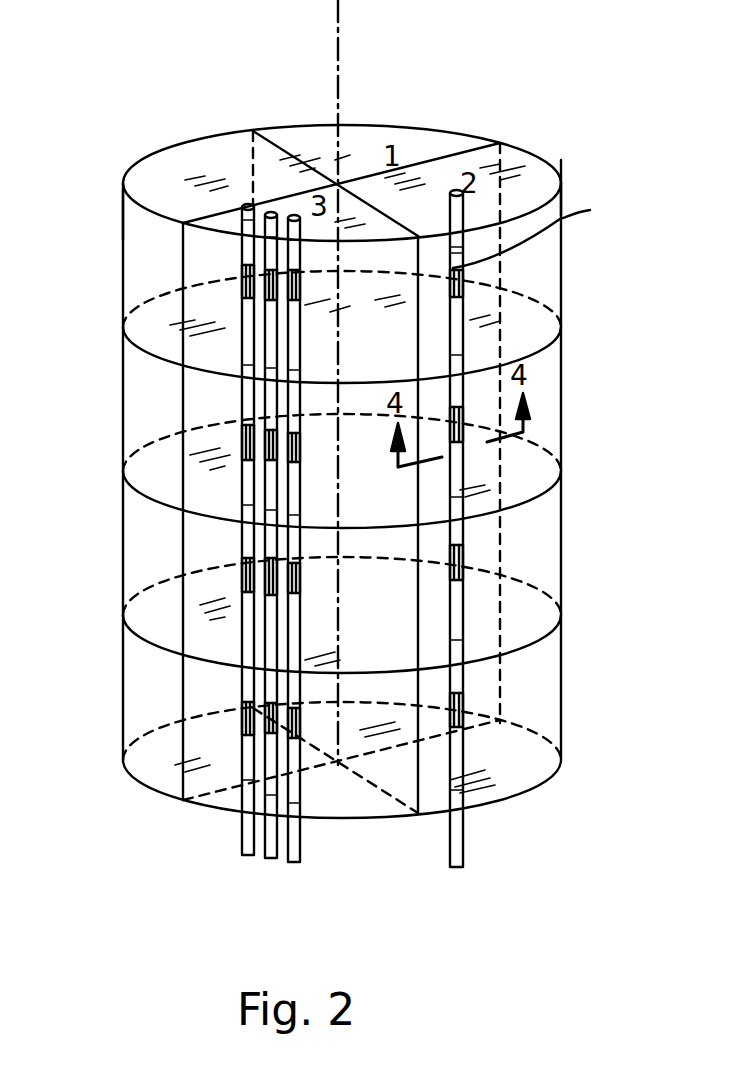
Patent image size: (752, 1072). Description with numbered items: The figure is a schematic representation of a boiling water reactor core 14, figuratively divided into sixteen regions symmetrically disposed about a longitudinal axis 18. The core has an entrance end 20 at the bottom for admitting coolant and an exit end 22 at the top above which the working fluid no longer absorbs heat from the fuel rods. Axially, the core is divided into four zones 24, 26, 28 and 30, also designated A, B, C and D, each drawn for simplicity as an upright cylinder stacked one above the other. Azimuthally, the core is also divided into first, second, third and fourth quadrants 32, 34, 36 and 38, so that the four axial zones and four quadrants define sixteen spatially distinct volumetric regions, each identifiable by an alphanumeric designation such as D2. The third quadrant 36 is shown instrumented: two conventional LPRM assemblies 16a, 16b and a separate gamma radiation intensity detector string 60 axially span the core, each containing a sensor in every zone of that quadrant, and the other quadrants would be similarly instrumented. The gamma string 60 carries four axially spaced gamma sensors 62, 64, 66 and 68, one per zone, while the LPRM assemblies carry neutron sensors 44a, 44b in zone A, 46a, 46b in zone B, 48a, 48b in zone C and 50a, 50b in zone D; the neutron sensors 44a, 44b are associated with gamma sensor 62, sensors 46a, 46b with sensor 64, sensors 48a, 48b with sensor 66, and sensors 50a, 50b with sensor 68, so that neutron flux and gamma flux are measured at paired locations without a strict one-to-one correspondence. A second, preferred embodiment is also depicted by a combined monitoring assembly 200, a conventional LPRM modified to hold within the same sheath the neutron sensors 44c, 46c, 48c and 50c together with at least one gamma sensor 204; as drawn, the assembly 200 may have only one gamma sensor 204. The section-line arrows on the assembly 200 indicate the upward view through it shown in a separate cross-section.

The BWR reactor core 14 is at (535, 78).
The longitudinal axis 18 is at (371, 382).
The entrance end 20 is at (369, 818).
The exit end 22 is at (302, 130).
The first quadrant 32 is at (372, 135).
The second quadrant 34 is at (555, 180).
The third quadrant 36 is at (215, 222).
The fourth quadrant 38 is at (205, 150).
The gamma sensor 204 is at (547, 229).
The axial zone D 30 is at (540, 254).
The axial zone C 28 is at (540, 390).
The axial zone B 26 is at (540, 550).
The axial zone A 24 is at (540, 686).
The LPRM assembly 16a is at (252, 852).
The gamma radiation intensity detector string 60 is at (280, 858).
The LPRM assembly 16b is at (303, 855).
The combined monitoring assembly 200 is at (473, 830).
The neutron sensor 50a is at (247, 281).
The gamma sensor 68 is at (290, 290).
The neutron sensor 50b is at (293, 300).
The neutron sensor 50c is at (453, 273).
The neutron sensor 48a is at (246, 445).
The gamma sensor 66 is at (292, 457).
The neutron sensor 48b is at (293, 455).
The neutron sensor 48c is at (463, 430).
The neutron sensor 46a is at (245, 570).
The gamma sensor 64 is at (268, 595).
The neutron sensor 46b is at (292, 597).
The neutron sensor 46c is at (467, 555).
The neutron sensor 44a is at (250, 720).
The gamma sensor 62 is at (292, 732).
The neutron sensor 44b is at (295, 735).
The neutron sensor 44c is at (468, 715).